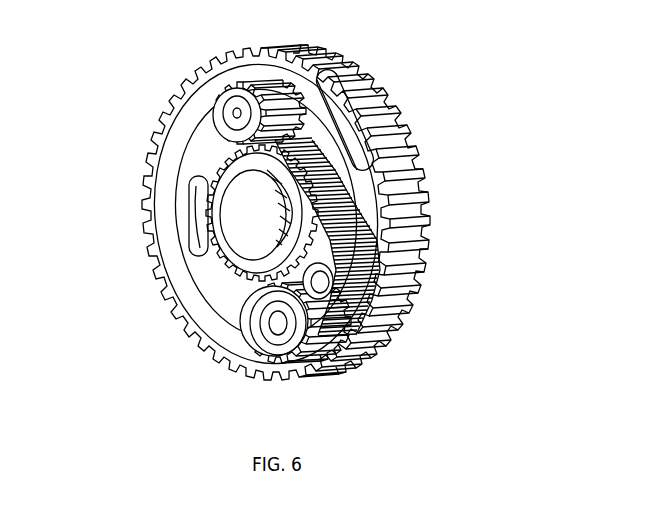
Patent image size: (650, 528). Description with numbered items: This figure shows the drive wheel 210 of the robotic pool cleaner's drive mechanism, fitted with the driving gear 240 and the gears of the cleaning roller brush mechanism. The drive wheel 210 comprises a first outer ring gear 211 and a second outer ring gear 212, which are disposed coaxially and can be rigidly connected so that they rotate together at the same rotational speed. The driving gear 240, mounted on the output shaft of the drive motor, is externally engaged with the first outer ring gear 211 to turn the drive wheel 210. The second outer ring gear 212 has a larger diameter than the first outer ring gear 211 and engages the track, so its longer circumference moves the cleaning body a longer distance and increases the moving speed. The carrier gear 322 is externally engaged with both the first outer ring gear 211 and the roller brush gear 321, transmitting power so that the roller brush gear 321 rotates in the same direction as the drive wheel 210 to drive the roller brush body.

The drive wheel 210 is at (292, 220).
The first outer ring gear 211 is at (347, 202).
The second outer ring gear 212 is at (143, 183).
The driving gear 240 is at (244, 77).
The roller brush gear 321 is at (265, 330).
The carrier gear 322 is at (325, 283).